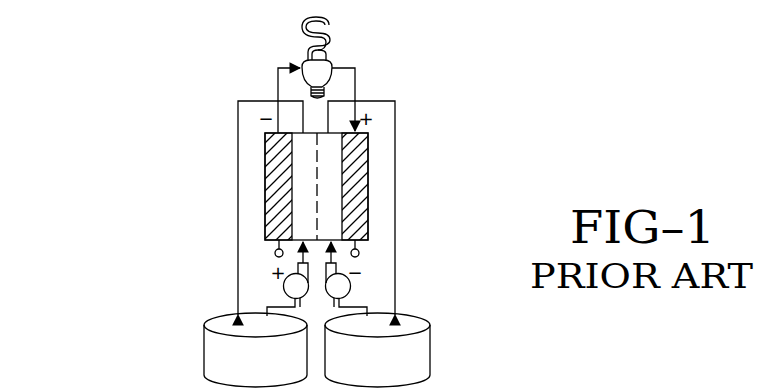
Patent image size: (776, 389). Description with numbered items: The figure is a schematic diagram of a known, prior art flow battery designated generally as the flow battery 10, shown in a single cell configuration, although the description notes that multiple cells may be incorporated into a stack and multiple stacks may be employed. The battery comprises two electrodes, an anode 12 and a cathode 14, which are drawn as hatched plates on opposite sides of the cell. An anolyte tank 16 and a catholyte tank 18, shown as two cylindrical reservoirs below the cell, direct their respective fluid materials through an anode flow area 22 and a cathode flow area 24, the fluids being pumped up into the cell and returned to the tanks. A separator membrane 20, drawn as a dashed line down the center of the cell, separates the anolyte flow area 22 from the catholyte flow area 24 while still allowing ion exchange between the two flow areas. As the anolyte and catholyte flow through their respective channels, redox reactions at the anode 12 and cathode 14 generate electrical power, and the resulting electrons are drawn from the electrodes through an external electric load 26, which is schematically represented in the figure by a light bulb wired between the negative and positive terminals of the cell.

The flow battery 10 is at (118, 124).
The anode 12 is at (265, 190).
The cathode 14 is at (368, 190).
The anolyte tank 16 is at (204, 352).
The catholyte tank 18 is at (430, 352).
The separator membrane 20 is at (318, 165).
The anode flow area 22 is at (300, 153).
The cathode flow area 24 is at (333, 225).
The external electric load 26 is at (326, 65).